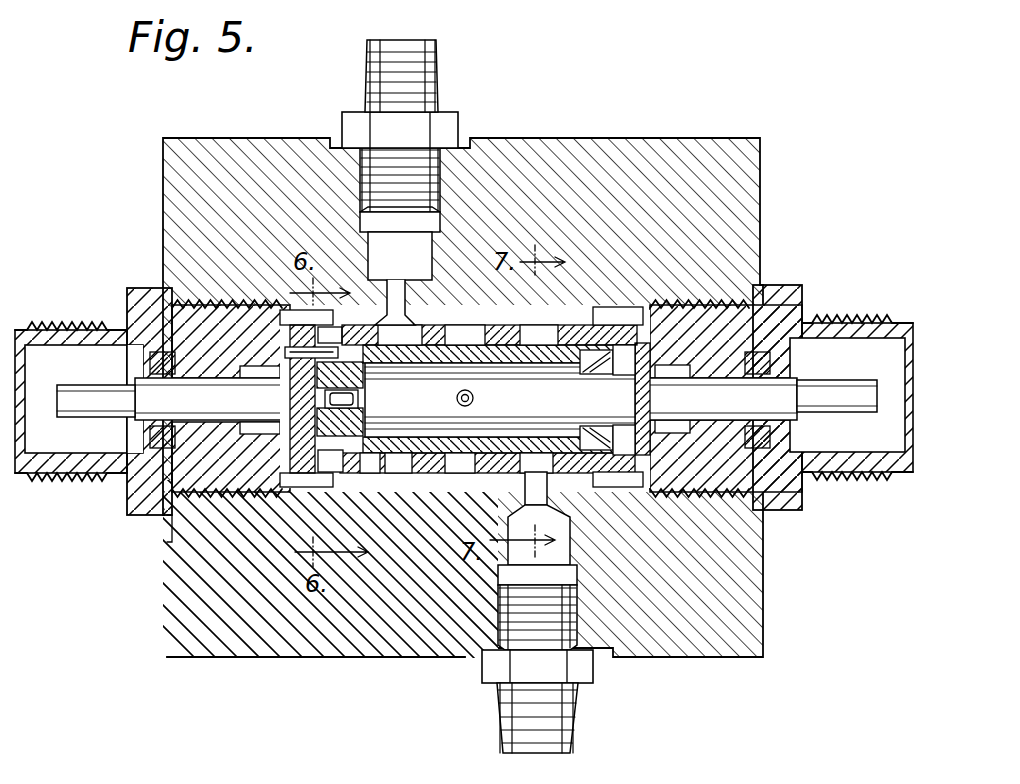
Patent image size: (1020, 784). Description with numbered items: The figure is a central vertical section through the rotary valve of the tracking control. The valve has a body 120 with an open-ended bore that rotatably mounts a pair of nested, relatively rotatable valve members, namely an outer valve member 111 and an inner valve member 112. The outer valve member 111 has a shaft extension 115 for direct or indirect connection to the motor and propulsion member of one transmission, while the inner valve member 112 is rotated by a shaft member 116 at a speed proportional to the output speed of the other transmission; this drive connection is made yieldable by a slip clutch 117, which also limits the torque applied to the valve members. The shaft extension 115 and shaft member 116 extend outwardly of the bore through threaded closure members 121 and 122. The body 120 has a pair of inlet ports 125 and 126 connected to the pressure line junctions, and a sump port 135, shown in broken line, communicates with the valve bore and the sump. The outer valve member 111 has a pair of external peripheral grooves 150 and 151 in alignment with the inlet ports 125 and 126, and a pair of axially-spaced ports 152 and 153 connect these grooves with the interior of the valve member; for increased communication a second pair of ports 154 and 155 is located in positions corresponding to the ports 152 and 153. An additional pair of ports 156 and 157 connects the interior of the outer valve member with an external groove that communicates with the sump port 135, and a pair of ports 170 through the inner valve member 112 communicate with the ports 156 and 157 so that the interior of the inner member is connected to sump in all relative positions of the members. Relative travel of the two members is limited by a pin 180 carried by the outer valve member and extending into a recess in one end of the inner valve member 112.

The outer valve member 111 is at (335, 475).
The inner valve member 112 is at (388, 478).
The shaft extension 115 is at (112, 408).
The shaft member 116 is at (833, 410).
The slip clutch 117 is at (726, 398).
The body 120 is at (707, 147).
The threaded closure member 121 is at (148, 520).
The threaded closure member 122 is at (795, 300).
The inlet port 125 is at (440, 122).
The inlet port 126 is at (585, 668).
The sump port 135 is at (430, 342).
The external peripheral groove 150 is at (408, 322).
The external peripheral groove 151 is at (545, 332).
The port 152 is at (467, 399).
The port 153 is at (545, 350).
The port 154 is at (413, 470).
The port 155 is at (548, 480).
The port 156 is at (478, 342).
The port 157 is at (462, 470).
The port 170 is at (480, 370).
The pin 180 is at (300, 336).